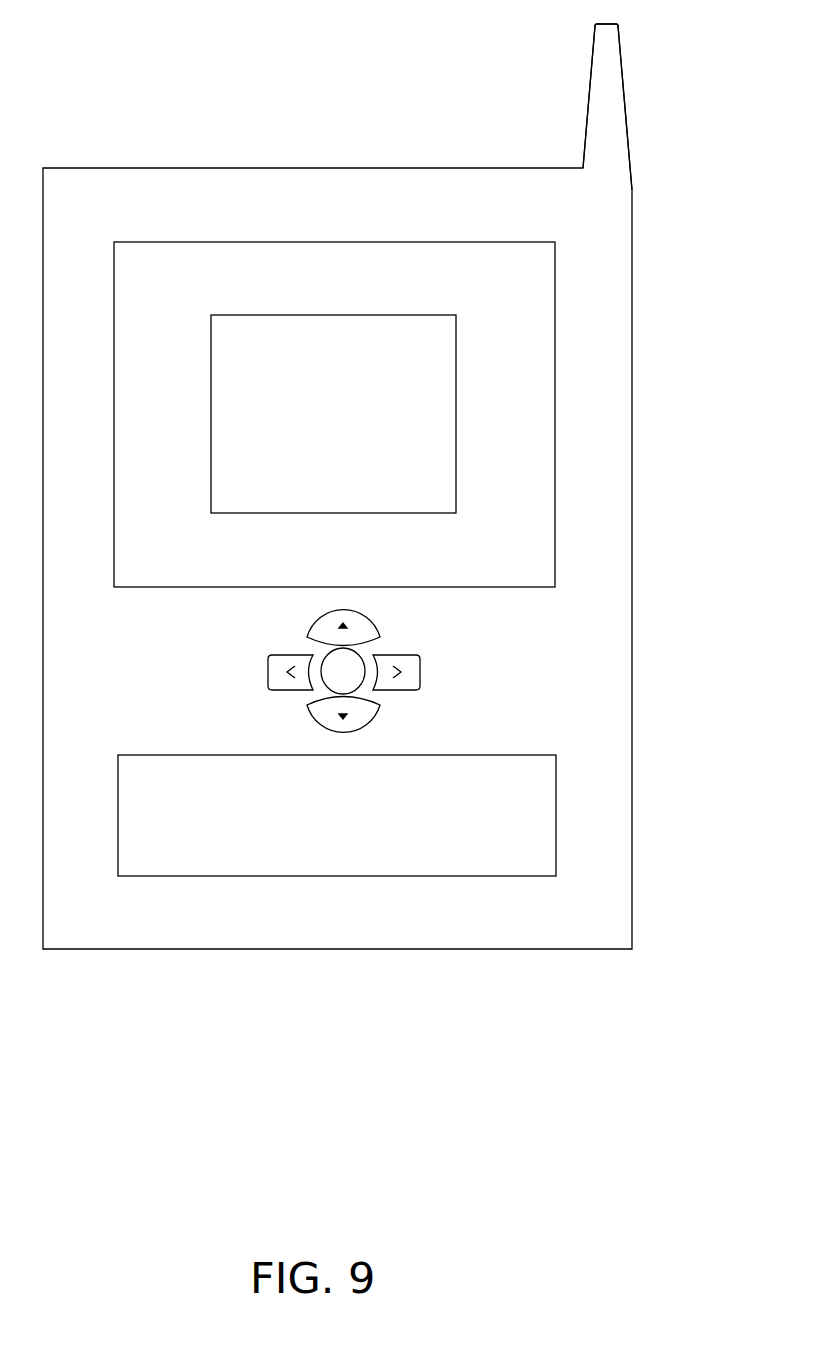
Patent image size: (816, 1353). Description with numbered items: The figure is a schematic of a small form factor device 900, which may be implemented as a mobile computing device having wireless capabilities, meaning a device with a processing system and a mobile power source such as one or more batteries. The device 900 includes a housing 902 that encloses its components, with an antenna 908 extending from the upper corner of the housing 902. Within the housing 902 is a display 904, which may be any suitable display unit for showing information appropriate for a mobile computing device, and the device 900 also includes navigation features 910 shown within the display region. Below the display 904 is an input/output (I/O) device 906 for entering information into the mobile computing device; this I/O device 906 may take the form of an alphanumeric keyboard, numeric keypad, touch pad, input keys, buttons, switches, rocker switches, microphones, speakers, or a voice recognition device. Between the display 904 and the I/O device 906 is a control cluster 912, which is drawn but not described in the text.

The small form factor device 900 is at (330, 1243).
The housing 902 is at (632, 542).
The display 904 is at (492, 242).
The input/output (I/O) device 906 is at (556, 783).
The antenna 908 is at (591, 72).
The navigation features 910 is at (397, 315).
The navigation control 912 is at (431, 661).